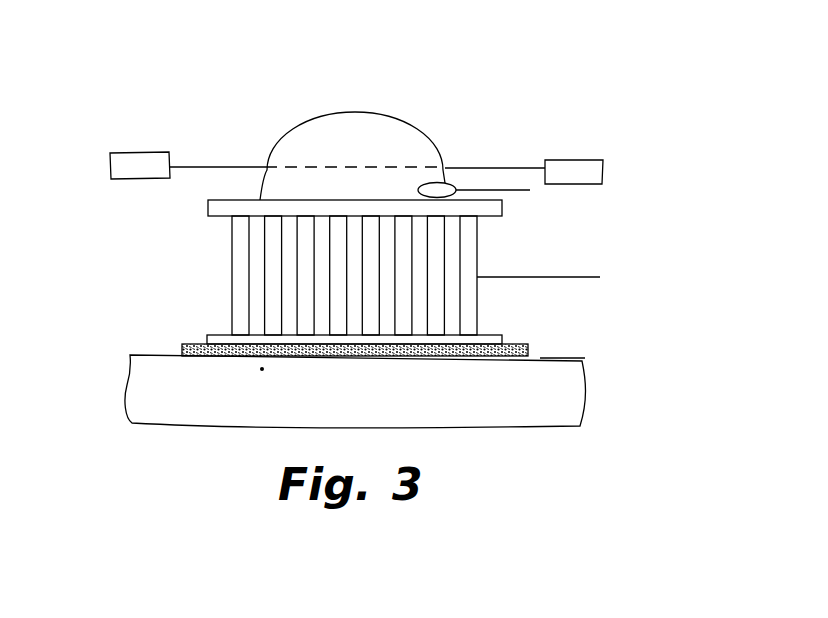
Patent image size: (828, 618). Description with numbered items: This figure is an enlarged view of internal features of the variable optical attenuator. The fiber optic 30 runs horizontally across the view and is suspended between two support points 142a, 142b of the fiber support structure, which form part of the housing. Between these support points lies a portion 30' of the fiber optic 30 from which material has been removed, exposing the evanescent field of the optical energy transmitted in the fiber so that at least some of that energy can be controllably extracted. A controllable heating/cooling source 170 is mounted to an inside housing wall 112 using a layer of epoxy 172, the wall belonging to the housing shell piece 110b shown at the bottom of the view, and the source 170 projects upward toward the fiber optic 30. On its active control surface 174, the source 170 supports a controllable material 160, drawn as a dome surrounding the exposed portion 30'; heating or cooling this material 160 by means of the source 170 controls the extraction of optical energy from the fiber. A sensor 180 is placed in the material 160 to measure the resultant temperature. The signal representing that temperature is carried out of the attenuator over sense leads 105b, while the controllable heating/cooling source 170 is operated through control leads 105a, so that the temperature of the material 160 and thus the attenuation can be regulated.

The support point 142a is at (170, 166).
The support point 142b is at (545, 166).
The fiber optic 30 is at (495, 133).
The portion of fiber optic 30' is at (355, 101).
The controllable material 160 is at (379, 112).
The sensor 180 is at (437, 190).
The active control surface 174 is at (240, 200).
The controllable heating/cooling source 170 is at (217, 250).
The sense leads 105b is at (517, 192).
The control leads 105a is at (600, 277).
The epoxy 172 is at (510, 347).
The shell piece 110b is at (155, 388).
The inside housing wall 112 is at (562, 358).